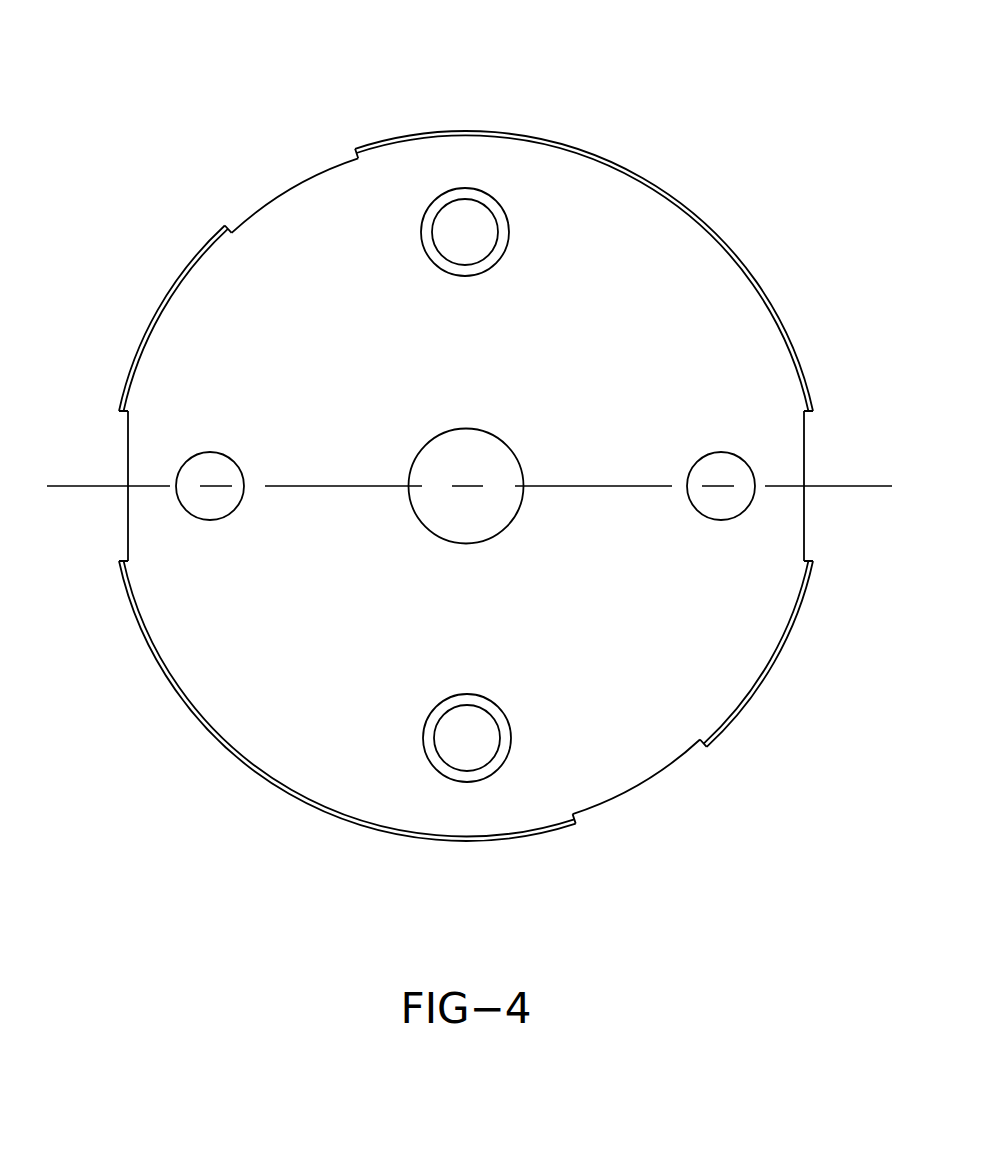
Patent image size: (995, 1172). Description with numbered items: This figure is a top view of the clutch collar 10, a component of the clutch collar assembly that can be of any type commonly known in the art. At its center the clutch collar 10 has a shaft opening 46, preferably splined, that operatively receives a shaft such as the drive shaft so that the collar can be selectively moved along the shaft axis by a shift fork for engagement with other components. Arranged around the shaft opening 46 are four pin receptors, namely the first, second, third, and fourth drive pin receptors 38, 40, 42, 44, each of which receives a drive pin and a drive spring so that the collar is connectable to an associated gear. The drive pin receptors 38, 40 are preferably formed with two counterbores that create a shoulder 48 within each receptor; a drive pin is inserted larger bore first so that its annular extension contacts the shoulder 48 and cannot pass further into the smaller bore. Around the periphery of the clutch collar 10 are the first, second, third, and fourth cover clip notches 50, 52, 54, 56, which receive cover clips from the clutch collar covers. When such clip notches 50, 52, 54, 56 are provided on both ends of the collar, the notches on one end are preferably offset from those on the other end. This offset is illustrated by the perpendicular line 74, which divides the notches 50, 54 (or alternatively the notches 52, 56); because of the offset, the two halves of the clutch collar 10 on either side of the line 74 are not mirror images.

The clutch collar 10 is at (478, 96).
The first drive pin receptor 38 is at (466, 218).
The second drive pin receptor 40 is at (459, 749).
The third drive pin receptor 42 is at (728, 503).
The fourth drive pin receptor 44 is at (208, 505).
The shaft opening 46 is at (450, 510).
The shoulder 48 is at (500, 211).
The first cover clip notch 50 is at (125, 499).
The second cover clip notch 52 is at (312, 175).
The third cover clip notch 54 is at (808, 467).
The fourth cover clip notch 56 is at (640, 781).
The perpendicular line 74 is at (843, 487).